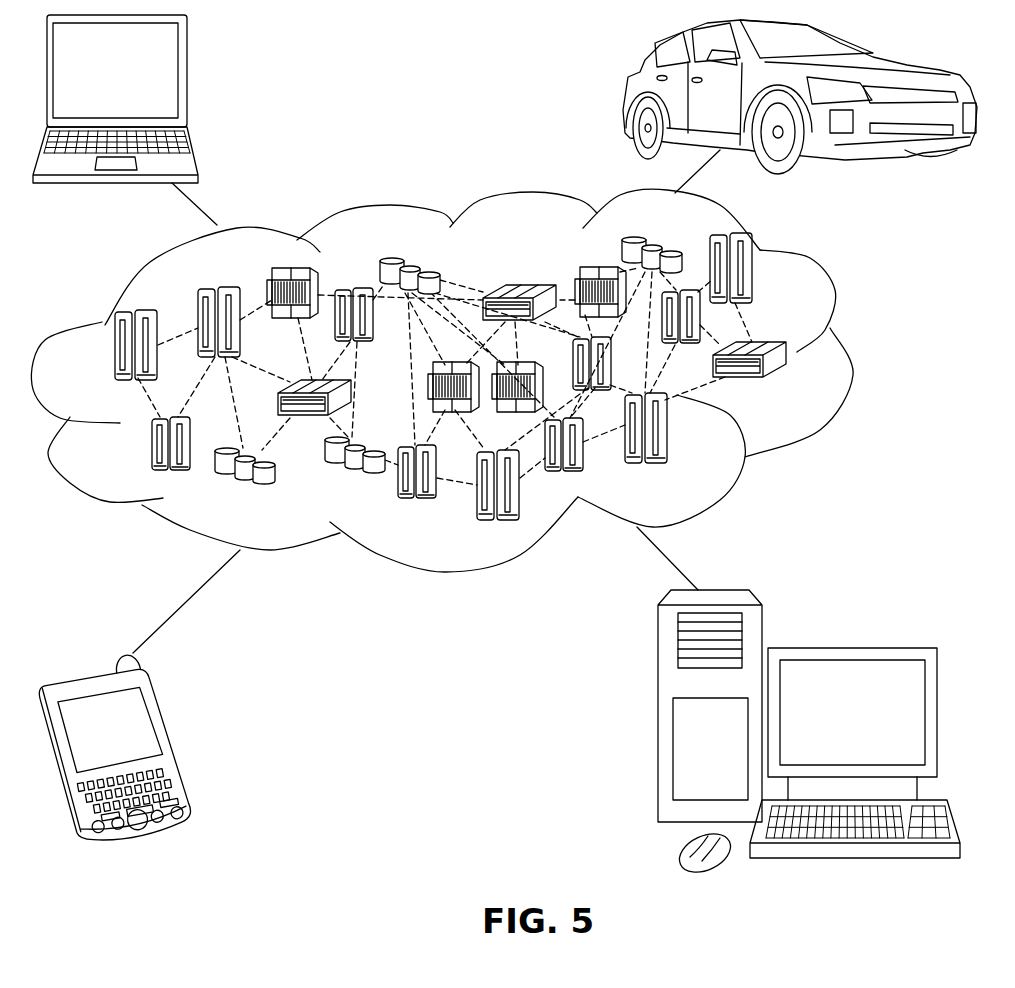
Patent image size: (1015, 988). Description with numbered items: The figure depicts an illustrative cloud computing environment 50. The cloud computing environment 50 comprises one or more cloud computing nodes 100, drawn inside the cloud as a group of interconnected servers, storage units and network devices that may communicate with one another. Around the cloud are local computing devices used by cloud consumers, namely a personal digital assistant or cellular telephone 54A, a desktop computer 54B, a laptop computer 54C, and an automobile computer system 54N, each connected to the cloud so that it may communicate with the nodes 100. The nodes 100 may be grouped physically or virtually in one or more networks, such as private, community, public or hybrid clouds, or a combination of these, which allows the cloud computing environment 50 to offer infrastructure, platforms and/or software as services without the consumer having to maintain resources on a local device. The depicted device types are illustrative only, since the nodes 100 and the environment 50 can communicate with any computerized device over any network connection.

The cloud computing environment 50 is at (851, 357).
The cloud computing nodes 100 is at (793, 387).
The personal digital assistant or cellular telephone 54A is at (178, 744).
The desktop computer 54B is at (850, 647).
The laptop computer 54C is at (187, 80).
The automobile computer system 54N is at (632, 100).